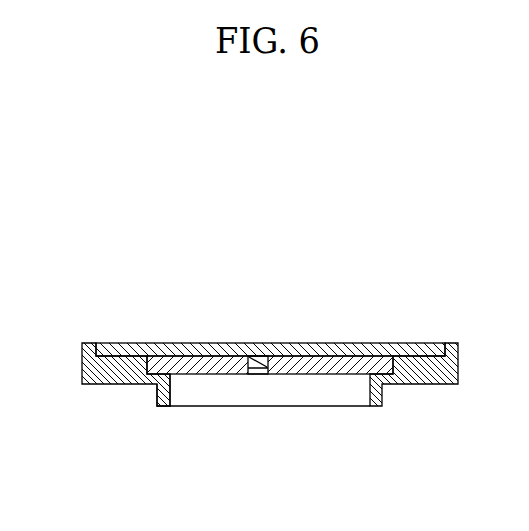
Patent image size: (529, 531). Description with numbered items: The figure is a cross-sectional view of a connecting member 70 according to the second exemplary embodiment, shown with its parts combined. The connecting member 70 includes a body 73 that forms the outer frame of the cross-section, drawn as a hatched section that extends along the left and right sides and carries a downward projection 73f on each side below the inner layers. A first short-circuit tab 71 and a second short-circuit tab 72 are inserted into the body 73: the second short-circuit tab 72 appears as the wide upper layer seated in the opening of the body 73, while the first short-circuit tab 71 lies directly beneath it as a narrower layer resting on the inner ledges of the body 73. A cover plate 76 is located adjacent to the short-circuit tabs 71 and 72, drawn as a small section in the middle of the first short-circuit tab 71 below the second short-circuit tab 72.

The connecting member 70 is at (421, 308).
The first short-circuit tab 71 is at (328, 365).
The second short-circuit tab 72 is at (187, 350).
The body 73 is at (92, 371).
The frame leg 73f is at (163, 401).
The cover plate 76 is at (239, 357).